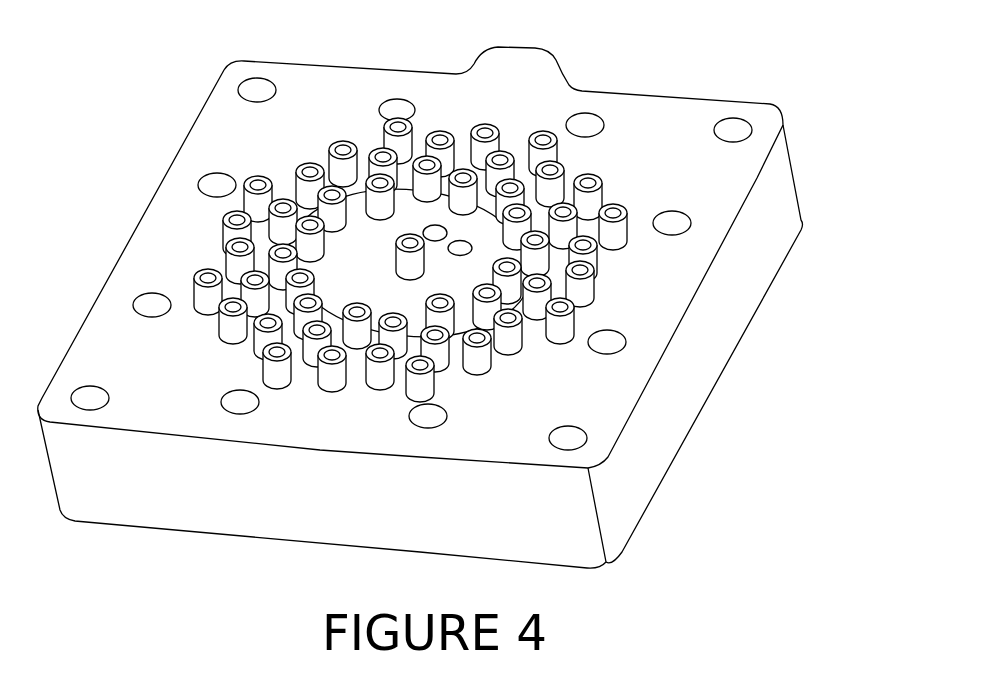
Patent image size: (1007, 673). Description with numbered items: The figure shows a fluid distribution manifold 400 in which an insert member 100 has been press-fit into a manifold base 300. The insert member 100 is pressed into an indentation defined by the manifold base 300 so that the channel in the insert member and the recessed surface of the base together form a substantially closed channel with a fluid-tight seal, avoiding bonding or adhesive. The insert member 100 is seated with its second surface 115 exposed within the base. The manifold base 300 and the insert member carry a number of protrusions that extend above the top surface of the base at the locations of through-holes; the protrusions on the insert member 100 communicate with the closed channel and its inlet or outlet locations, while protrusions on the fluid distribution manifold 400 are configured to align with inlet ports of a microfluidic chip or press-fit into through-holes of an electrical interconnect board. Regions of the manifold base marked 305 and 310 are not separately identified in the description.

The insert member 100 is at (381, 286).
The second surface 115 is at (458, 256).
The manifold base 300 is at (565, 400).
The top surface of socket 305 is at (666, 132).
The side surface of socket 310 is at (745, 423).
The fluid distribution manifold 400 is at (762, 535).